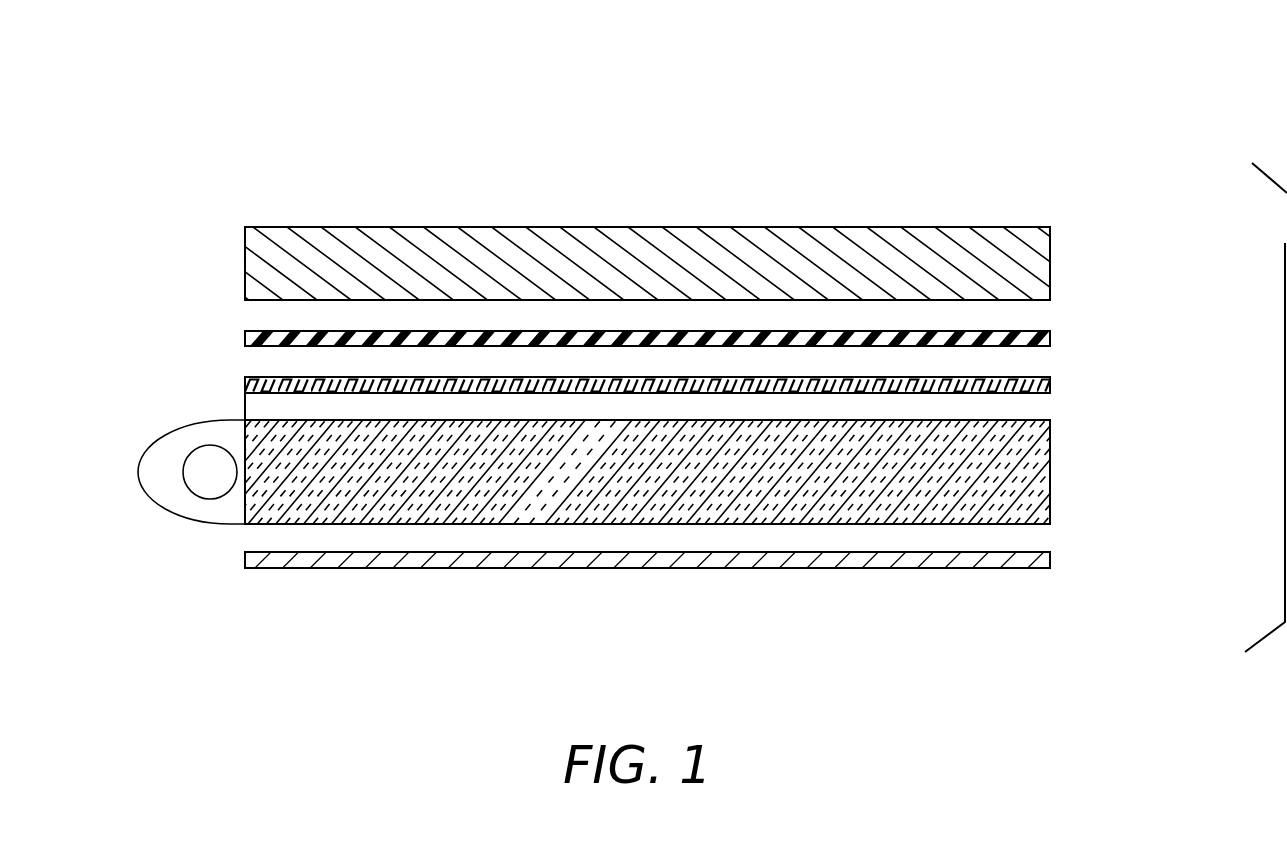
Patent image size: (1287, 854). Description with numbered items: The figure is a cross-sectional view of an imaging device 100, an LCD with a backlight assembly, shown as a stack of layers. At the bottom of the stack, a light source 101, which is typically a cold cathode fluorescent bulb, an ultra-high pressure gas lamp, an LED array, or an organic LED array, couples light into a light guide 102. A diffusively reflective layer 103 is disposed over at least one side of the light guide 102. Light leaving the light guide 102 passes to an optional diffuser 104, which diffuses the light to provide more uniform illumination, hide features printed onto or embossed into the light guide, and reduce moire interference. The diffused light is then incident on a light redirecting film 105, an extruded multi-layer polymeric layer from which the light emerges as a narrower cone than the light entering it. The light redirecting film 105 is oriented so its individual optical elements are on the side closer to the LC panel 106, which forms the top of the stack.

The imaging device 100 is at (353, 110).
The light source 101 is at (207, 480).
The light guide 102 is at (1030, 475).
The diffusively reflective layer 103 is at (1023, 562).
The diffuser 104 is at (1040, 388).
The light redirecting film 105 is at (1040, 343).
The LC panel 106 is at (1030, 263).